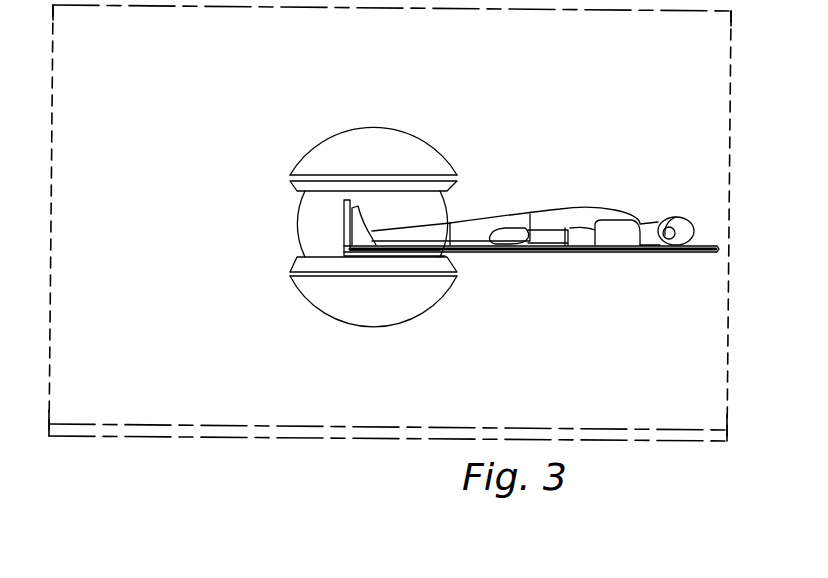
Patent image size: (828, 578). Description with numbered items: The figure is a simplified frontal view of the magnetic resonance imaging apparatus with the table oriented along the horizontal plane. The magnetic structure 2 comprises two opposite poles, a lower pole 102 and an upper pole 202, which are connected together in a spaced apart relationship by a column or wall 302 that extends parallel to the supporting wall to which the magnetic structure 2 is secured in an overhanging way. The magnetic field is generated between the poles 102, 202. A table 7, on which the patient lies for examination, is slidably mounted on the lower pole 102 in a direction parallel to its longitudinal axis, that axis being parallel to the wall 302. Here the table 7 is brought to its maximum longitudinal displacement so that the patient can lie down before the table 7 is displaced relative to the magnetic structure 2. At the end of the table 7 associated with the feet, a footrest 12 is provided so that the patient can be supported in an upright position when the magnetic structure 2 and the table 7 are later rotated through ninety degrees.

The magnetic structure 2 is at (373, 231).
The upper pole 202 is at (428, 162).
The lower pole 102 is at (392, 302).
The column or wall 302 is at (323, 235).
The footrest 12 is at (342, 217).
The table 7 is at (550, 255).